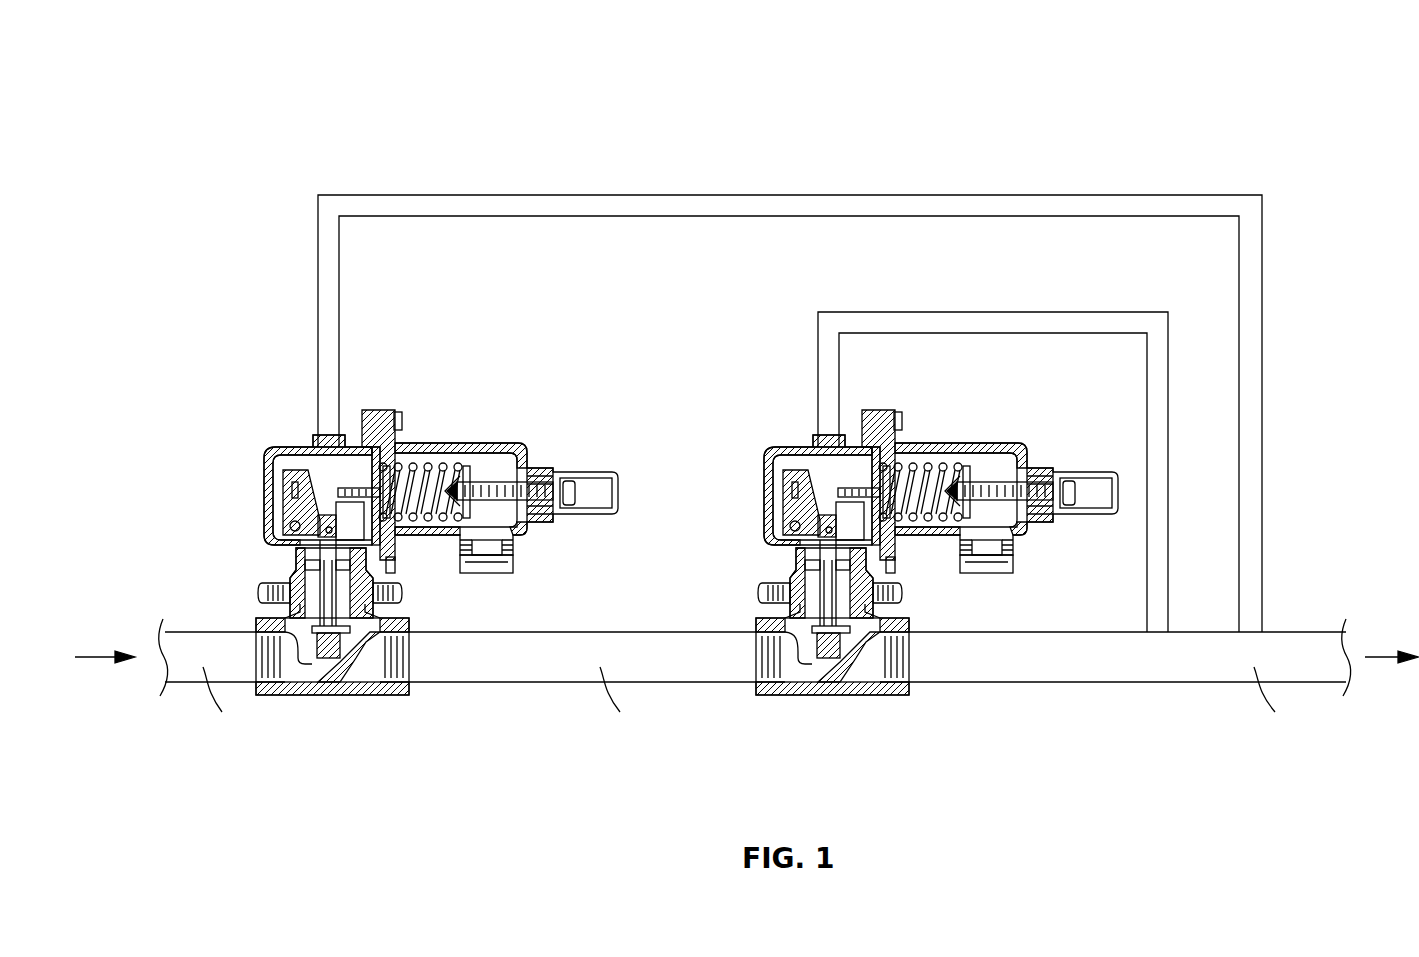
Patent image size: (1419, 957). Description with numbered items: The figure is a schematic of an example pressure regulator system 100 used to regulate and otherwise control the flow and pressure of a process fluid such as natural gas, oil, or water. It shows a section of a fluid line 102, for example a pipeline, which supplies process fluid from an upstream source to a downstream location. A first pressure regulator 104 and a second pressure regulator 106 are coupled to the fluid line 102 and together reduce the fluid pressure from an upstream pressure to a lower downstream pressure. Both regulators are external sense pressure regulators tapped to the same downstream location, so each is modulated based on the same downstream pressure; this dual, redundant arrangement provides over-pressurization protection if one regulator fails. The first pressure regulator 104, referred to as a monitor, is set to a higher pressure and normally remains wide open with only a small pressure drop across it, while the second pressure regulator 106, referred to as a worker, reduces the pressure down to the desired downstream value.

The pressure regulator system 100 is at (240, 85).
The fluid line 102 is at (498, 667).
The first pressure regulator 104 is at (290, 448).
The second pressure regulator 106 is at (782, 466).